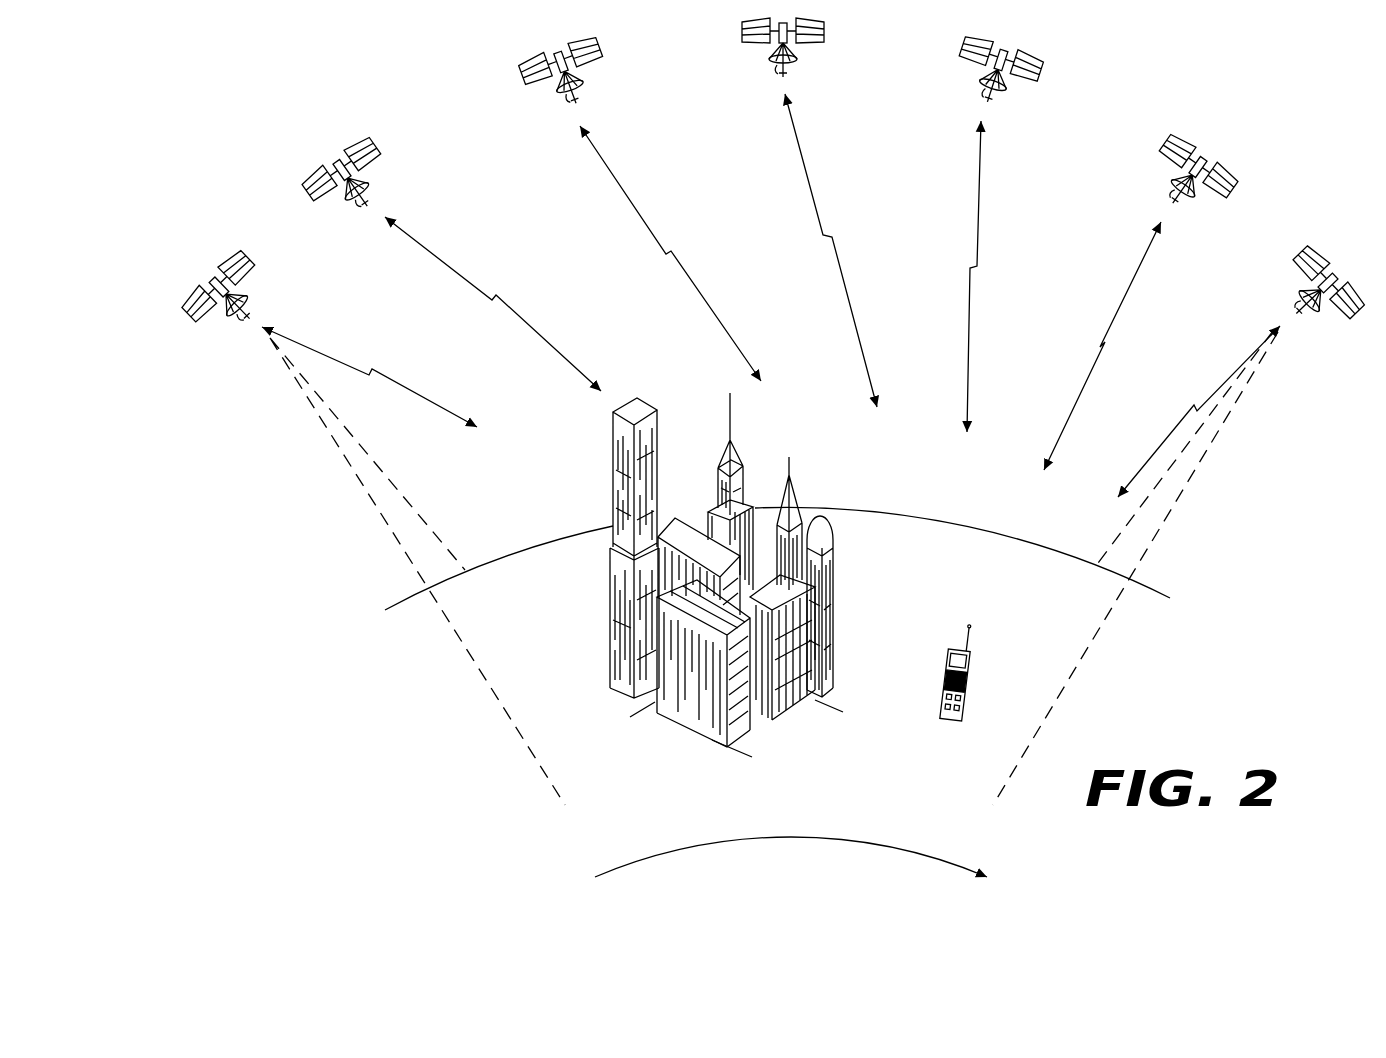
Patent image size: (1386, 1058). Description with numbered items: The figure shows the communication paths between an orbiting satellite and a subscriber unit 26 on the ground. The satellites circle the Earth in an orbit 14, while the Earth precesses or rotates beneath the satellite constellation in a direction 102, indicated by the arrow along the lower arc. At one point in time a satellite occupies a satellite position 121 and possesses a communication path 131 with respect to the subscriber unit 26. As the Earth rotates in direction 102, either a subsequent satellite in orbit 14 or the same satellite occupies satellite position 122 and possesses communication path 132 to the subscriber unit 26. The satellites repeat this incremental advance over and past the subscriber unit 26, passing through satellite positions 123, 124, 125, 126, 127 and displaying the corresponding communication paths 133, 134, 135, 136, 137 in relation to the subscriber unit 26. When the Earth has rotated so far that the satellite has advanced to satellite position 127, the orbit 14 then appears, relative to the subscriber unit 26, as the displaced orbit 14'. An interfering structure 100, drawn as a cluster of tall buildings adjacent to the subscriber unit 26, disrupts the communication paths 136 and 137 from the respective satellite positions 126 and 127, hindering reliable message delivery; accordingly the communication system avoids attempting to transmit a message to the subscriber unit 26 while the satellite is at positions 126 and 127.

The orbit 14 is at (1135, 568).
The orbit 14' is at (417, 571).
The subscriber unit 26 is at (958, 650).
The interfering structure 100 is at (700, 718).
The direction 102 is at (848, 838).
The satellite position 121 is at (1328, 262).
The satellite position 122 is at (1188, 145).
The satellite position 123 is at (996, 86).
The satellite position 124 is at (777, 62).
The satellite position 125 is at (565, 87).
The satellite position 126 is at (349, 146).
The satellite position 127 is at (229, 256).
The communication path 131 is at (1195, 410).
The communication path 132 is at (1116, 325).
The communication path 133 is at (1015, 197).
The communication path 134 is at (826, 208).
The communication path 135 is at (703, 240).
The communication path 136 is at (498, 302).
The communication path 137 is at (372, 376).